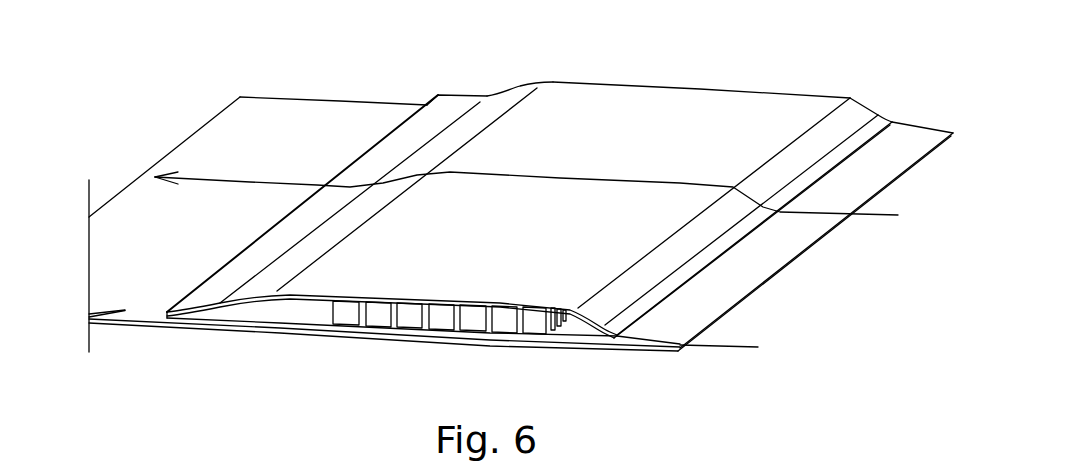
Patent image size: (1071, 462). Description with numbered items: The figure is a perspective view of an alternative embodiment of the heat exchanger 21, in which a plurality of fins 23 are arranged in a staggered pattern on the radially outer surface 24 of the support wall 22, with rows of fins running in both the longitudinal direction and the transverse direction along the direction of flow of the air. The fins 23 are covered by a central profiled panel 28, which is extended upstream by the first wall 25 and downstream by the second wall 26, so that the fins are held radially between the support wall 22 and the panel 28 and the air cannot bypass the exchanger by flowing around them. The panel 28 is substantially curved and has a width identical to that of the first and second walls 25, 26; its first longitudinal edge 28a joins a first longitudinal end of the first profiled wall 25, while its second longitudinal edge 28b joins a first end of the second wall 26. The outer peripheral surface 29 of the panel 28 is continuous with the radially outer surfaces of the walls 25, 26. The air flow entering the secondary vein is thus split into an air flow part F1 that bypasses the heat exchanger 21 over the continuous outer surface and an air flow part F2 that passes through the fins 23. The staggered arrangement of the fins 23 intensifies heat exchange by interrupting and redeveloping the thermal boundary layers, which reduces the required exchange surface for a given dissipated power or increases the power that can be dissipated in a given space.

The heat exchanger 21 is at (891, 64).
The support wall 22 is at (288, 120).
The fins 23 is at (400, 336).
The radially outer surface 24 is at (234, 137).
The first wall 25 is at (894, 96).
The second wall 26 is at (462, 72).
The profiled panel 28 is at (717, 123).
The first longitudinal edge 28a is at (850, 98).
The second longitudinal edge 28b is at (550, 82).
The outer peripheral surface 29 is at (624, 114).
The air flow part F1 is at (540, 199).
The air flow part F2 is at (733, 346).